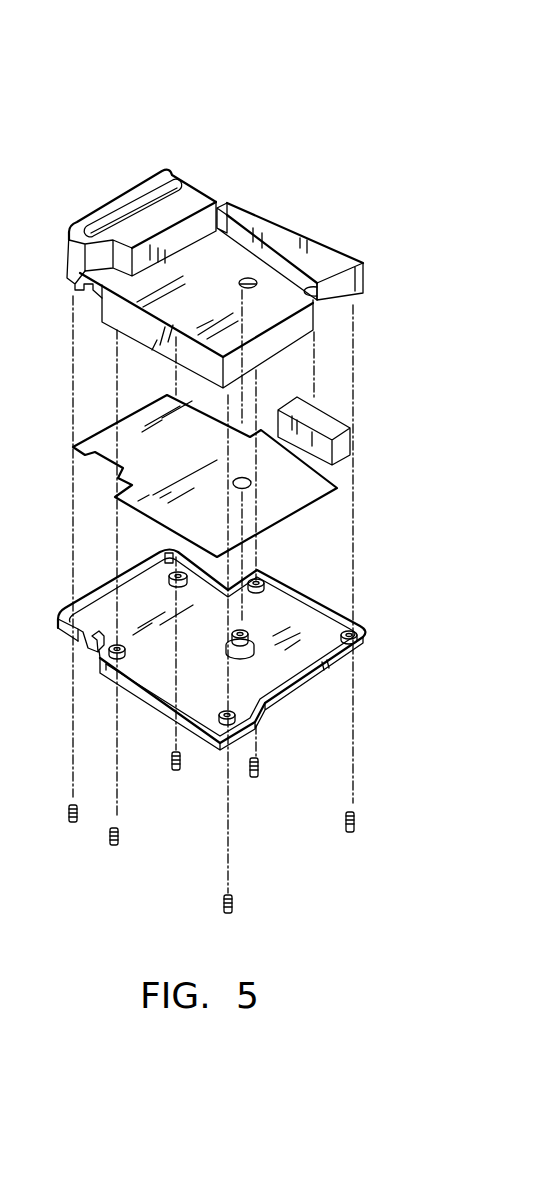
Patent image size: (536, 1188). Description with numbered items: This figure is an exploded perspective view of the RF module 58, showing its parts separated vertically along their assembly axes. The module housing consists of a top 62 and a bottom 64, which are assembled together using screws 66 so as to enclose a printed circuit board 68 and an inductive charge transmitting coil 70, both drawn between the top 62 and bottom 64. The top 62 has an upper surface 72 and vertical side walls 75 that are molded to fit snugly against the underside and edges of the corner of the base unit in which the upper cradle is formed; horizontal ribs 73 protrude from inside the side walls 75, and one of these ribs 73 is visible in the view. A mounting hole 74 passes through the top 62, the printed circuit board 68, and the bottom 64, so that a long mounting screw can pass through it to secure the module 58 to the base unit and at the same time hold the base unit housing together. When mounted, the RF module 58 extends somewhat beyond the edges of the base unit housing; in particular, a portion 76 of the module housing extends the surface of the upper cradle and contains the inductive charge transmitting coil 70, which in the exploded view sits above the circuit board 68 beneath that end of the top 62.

The RF module 58 is at (247, 95).
The top 62 is at (313, 328).
The bottom 64 is at (353, 653).
The screws 66 is at (73, 822).
The printed circuit board 68 is at (315, 505).
The inductive charge transmitting coil 70 is at (325, 417).
The upper surface 72 is at (246, 280).
The horizontal ribs 73 is at (205, 222).
The mounting hole 74 is at (298, 232).
The side walls 75 is at (188, 178).
The portion 76 is at (340, 255).